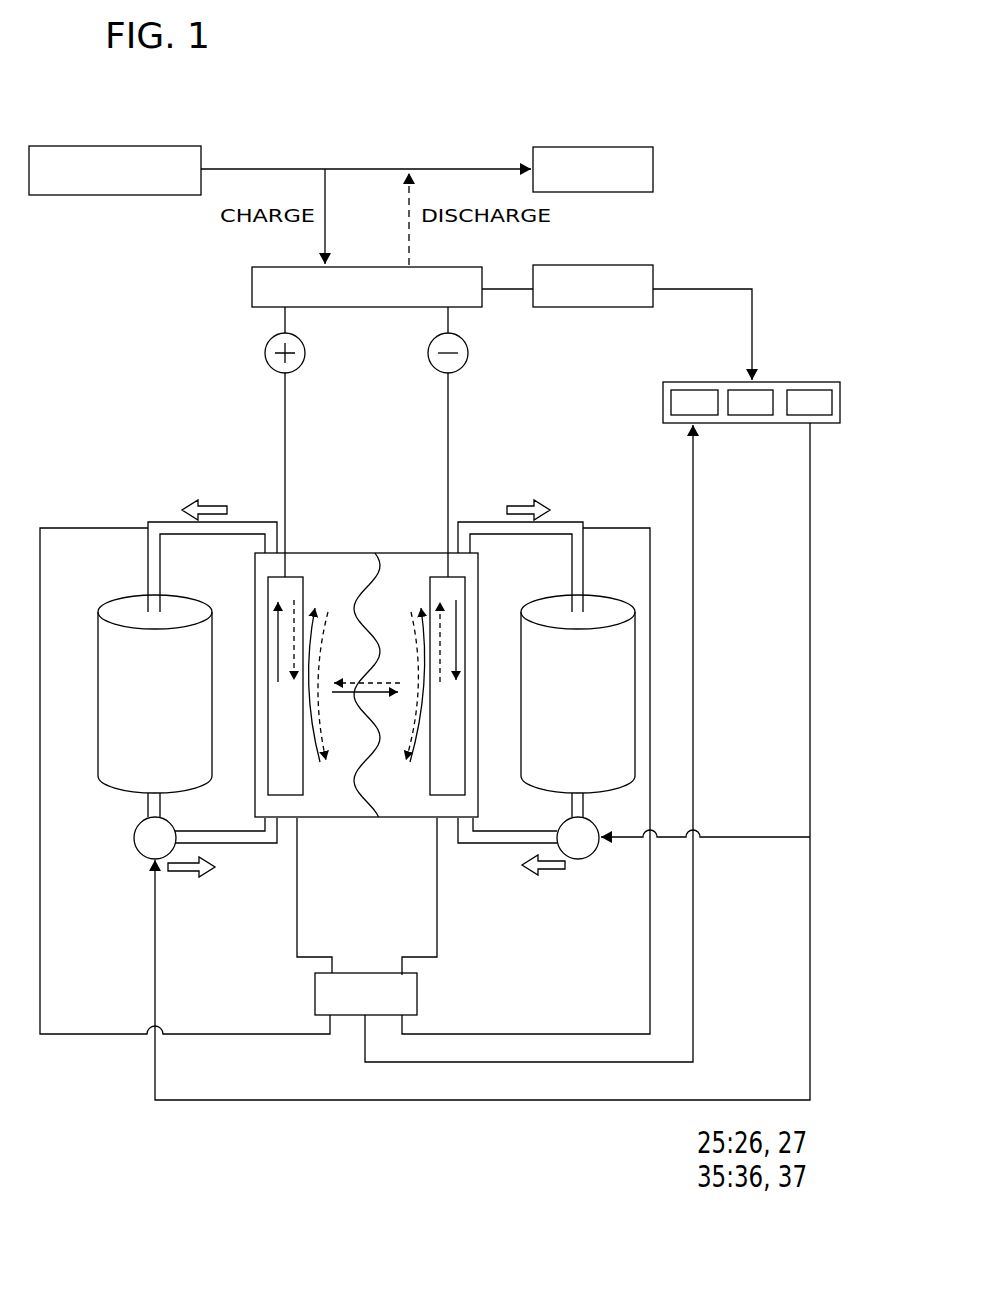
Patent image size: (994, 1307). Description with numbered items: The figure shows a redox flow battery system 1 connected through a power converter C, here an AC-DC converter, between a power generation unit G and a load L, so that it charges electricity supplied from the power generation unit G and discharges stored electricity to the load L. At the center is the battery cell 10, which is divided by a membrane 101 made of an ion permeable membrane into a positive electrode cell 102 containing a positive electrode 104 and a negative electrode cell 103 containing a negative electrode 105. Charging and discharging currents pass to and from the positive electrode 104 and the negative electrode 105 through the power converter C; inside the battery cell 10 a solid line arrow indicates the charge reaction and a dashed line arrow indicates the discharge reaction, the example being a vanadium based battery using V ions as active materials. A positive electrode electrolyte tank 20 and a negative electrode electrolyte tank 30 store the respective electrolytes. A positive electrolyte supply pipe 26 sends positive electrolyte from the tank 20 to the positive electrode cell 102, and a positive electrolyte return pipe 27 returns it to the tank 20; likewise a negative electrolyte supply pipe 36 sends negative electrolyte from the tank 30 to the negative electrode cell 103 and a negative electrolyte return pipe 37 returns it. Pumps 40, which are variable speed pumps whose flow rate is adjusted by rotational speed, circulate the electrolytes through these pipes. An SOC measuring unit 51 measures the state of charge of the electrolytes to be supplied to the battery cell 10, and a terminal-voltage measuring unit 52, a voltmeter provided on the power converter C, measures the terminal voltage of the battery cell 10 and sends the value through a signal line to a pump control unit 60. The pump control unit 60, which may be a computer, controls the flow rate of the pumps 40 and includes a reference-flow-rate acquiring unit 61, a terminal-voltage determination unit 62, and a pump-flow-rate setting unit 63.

The RF battery system 1 is at (745, 210).
The battery cell 10 is at (347, 546).
The positive electrode electrolyte tank 20 is at (116, 600).
The positive electrolyte supply pipe 26 is at (223, 848).
The positive electrolyte return pipe 27 is at (162, 520).
The negative electrode electrolyte tank 30 is at (606, 605).
The negative electrolyte supply pipe 36 is at (511, 846).
The negative electrolyte return pipe 37 is at (570, 520).
The pumps 40 is at (140, 856).
The SOC measuring unit 51 is at (345, 1016).
The terminal-voltage measuring unit 52 is at (636, 266).
The pump control unit 60 is at (781, 380).
The reference-flow-rate acquiring unit 61 is at (688, 390).
The terminal-voltage determination unit 62 is at (763, 424).
The pump-flow-rate setting unit 63 is at (815, 395).
The membrane 101 is at (377, 820).
The positive electrode cell 102 is at (335, 820).
The negative electrode cell 103 is at (395, 820).
The positive electrode 104 is at (266, 782).
The negative electrode 105 is at (468, 784).
The power generation unit G is at (157, 146).
The load L is at (595, 147).
The power converter C is at (290, 266).